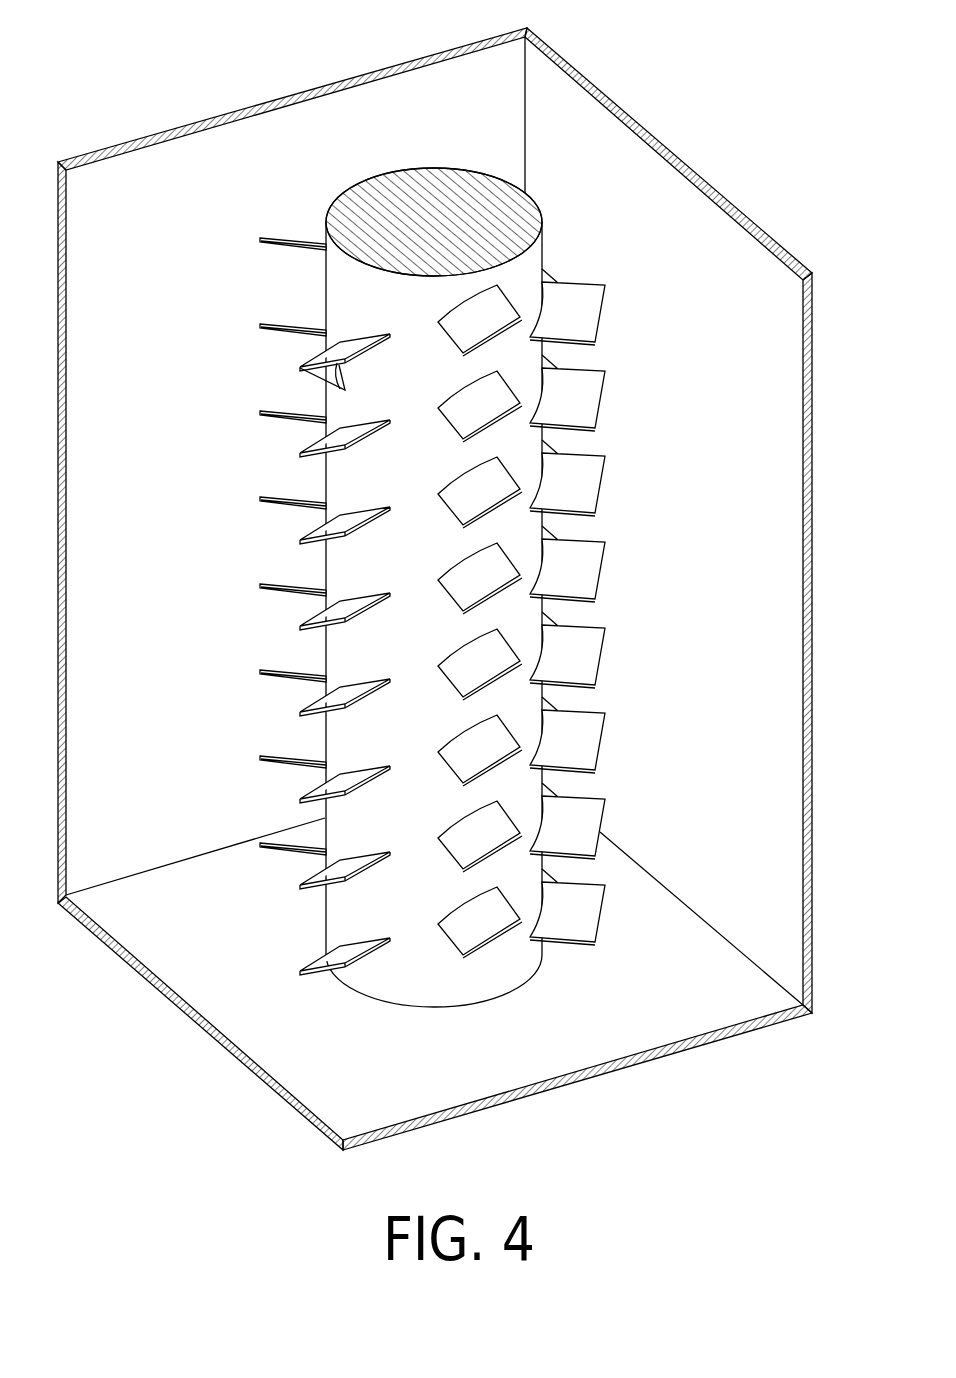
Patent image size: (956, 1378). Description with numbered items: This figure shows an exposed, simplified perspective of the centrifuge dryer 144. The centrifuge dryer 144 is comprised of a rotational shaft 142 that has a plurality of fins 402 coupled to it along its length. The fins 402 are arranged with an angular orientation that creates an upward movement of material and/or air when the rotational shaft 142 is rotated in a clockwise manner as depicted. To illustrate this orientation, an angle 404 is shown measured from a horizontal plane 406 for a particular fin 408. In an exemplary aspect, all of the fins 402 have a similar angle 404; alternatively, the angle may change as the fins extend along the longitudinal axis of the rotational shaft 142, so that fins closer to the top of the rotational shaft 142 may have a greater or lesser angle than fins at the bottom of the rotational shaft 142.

The rotational shaft 142 is at (410, 195).
The centrifuge dryer 144 is at (675, 140).
The fins 402 is at (612, 400).
The angle 404 is at (355, 333).
The horizontal plane 406 is at (316, 374).
The particular fin 408 is at (340, 376).